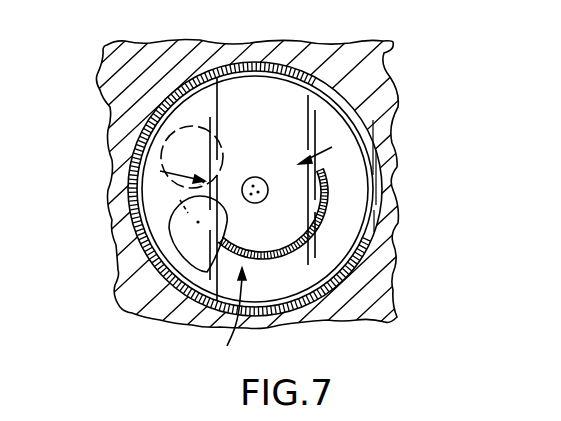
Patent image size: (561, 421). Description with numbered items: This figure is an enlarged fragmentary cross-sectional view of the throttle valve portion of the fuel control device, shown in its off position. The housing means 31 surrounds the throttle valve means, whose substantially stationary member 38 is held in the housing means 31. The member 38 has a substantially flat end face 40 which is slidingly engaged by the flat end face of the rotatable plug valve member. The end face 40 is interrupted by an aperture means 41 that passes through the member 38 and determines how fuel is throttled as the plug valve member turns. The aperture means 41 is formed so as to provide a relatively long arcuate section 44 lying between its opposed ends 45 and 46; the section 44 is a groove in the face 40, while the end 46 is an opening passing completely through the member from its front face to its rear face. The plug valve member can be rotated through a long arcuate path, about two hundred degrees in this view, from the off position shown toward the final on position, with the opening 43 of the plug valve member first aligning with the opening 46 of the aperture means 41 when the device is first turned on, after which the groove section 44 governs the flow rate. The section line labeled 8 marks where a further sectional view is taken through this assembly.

The housing means 31 is at (383, 53).
The member 38 is at (357, 228).
The end face 40 is at (360, 192).
The aperture means 41 is at (220, 320).
The opening 43 is at (162, 150).
The arcuate section 44 is at (277, 267).
The end 45 is at (327, 177).
The end 46 is at (223, 237).
The section line 8- 8 is at (246, 153).